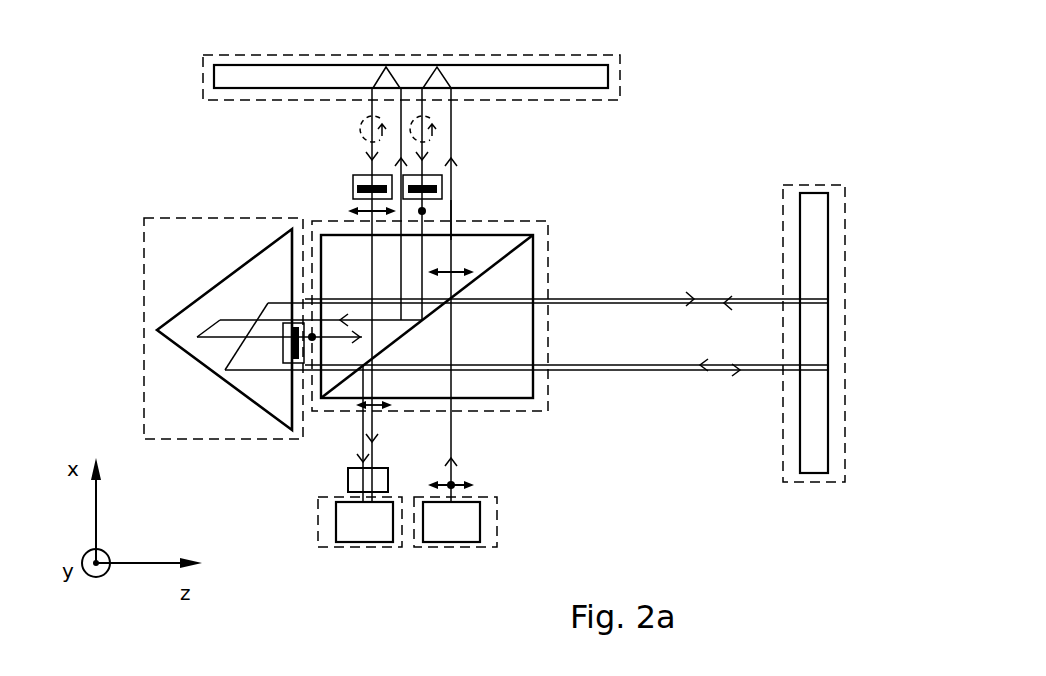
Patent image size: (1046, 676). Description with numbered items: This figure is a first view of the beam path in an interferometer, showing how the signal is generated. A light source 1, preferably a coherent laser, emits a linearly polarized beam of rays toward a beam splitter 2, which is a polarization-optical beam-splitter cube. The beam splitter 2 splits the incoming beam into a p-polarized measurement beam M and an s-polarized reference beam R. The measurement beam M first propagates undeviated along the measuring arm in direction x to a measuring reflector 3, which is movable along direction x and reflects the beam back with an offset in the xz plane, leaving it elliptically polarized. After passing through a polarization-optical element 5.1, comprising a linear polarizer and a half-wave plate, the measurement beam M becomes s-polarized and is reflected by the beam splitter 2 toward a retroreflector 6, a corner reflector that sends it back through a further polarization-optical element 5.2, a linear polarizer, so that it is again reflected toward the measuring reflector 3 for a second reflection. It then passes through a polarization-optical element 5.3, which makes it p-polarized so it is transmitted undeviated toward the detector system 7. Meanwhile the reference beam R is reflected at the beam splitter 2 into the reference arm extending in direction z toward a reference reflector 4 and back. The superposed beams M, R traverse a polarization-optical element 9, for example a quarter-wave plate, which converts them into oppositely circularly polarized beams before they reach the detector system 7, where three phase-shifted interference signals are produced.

The light source 1 is at (465, 534).
The beam splitter 2 is at (518, 388).
The measuring reflector 3 is at (565, 76).
The reference reflector 4 is at (818, 468).
The polarization-optical element 5.1 is at (441, 180).
The polarization-optical element 5.2 is at (287, 352).
The polarization-optical element 5.3 is at (356, 181).
The retroreflector 6 is at (250, 278).
The detector system 7 is at (372, 534).
The polarization-optical element 9 is at (372, 480).
The measurement beam M is at (452, 207).
The reference beam R is at (635, 298).